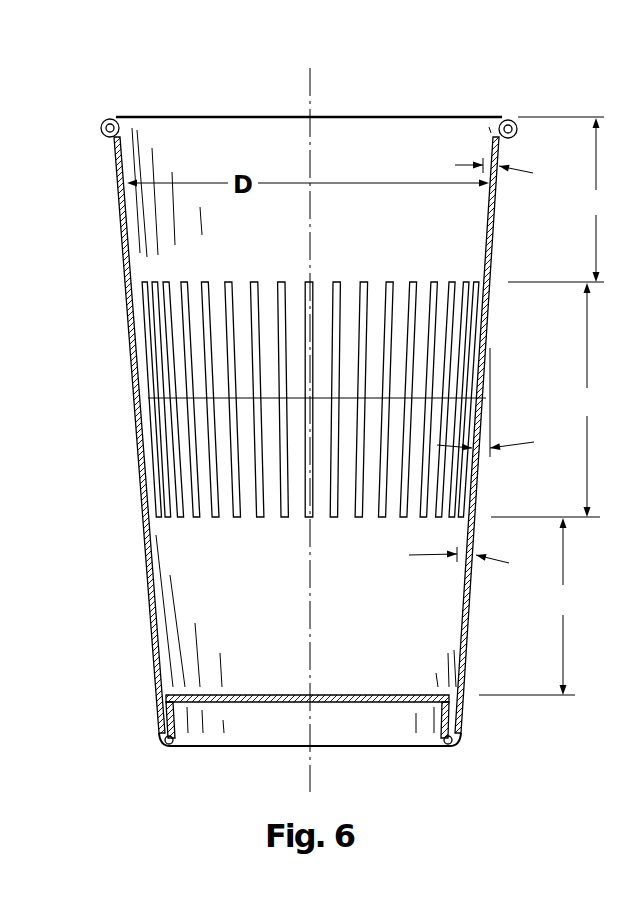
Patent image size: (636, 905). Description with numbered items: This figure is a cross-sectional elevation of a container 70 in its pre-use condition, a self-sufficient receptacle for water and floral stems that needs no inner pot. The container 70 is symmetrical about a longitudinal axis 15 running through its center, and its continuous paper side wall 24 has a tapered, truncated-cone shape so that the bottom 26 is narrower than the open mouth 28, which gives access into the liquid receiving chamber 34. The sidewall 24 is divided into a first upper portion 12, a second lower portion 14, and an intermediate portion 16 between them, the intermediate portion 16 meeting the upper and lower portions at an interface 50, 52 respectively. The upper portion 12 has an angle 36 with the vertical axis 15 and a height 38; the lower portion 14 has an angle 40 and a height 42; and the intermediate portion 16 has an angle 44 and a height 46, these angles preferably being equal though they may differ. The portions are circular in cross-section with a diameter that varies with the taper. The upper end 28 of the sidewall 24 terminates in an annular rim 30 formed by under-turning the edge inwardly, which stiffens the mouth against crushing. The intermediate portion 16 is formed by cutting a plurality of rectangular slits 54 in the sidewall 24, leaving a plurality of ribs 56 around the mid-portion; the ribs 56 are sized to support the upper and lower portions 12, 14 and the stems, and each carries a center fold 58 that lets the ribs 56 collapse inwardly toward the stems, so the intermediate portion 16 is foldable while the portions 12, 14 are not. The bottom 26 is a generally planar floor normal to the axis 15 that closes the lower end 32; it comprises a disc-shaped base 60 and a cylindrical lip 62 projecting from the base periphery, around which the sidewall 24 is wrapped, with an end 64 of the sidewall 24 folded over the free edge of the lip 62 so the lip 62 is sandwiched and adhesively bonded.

The container 70 is at (395, 78).
The first upper portion 12 is at (117, 165).
The second lower portion 14 is at (152, 617).
The longitudinal axis 15 is at (313, 767).
The intermediate portion 16 is at (269, 401).
The side wall 24 is at (125, 232).
The bottom 26 is at (393, 700).
The open mouth 28 is at (237, 115).
The annular rim 30 is at (107, 122).
The lower end 32 is at (293, 705).
The liquid receiving chamber 34 is at (388, 608).
The angle of first upper portion 36 is at (445, 170).
The height of first upper portion 38 is at (559, 199).
The angle of second lower portion 40 is at (426, 558).
The height of second lower portion 42 is at (531, 606).
The angle of intermediate portion 44 is at (528, 450).
The height of intermediate portion 46 is at (545, 400).
The interface 50 is at (147, 287).
The interface 52 is at (163, 517).
The slits 54 is at (163, 435).
The ribs 56 is at (173, 473).
The center fold 58 is at (150, 398).
The disc-shaped base 60 is at (238, 695).
The cylindrical lip 62 is at (463, 722).
The end of sidewall 64 is at (172, 738).